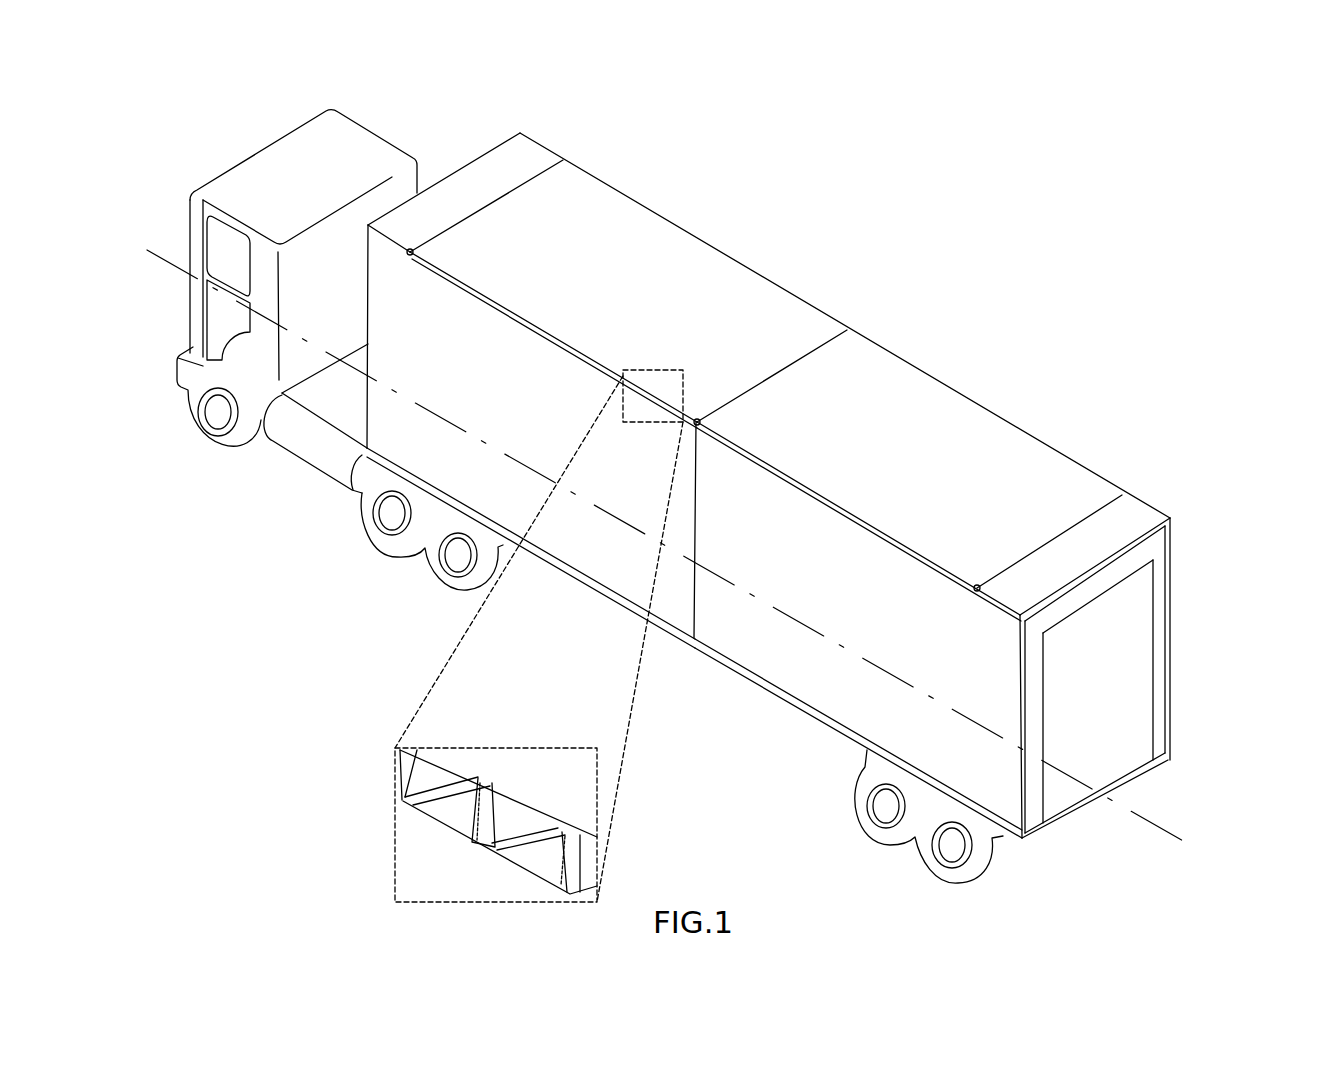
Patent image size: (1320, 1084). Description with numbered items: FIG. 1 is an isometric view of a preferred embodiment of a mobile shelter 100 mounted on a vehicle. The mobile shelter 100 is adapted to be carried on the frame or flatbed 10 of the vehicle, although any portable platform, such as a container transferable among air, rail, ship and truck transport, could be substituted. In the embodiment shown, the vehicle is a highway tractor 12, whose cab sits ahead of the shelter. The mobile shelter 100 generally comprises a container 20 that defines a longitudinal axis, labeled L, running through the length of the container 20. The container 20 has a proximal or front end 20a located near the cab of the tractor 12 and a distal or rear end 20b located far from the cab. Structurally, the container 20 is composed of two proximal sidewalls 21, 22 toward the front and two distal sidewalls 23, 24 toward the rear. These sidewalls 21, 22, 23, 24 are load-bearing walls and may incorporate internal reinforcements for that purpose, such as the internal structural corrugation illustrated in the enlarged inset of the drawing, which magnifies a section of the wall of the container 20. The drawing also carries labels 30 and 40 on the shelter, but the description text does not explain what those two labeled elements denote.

The mobile shelter 100 is at (906, 245).
The highway tractor 12 is at (237, 188).
The frame or flatbed 10 is at (747, 673).
The container 20 is at (790, 378).
The proximal or front end 20a is at (480, 152).
The distal or rear end 20b is at (1175, 718).
The proximal sidewall 21 is at (538, 445).
The proximal sidewall 22 is at (713, 250).
The distal sidewall 23 is at (822, 600).
The distal sidewall 24 is at (1020, 430).
The front roof rail 30 is at (463, 165).
The rear door 40 is at (1160, 637).